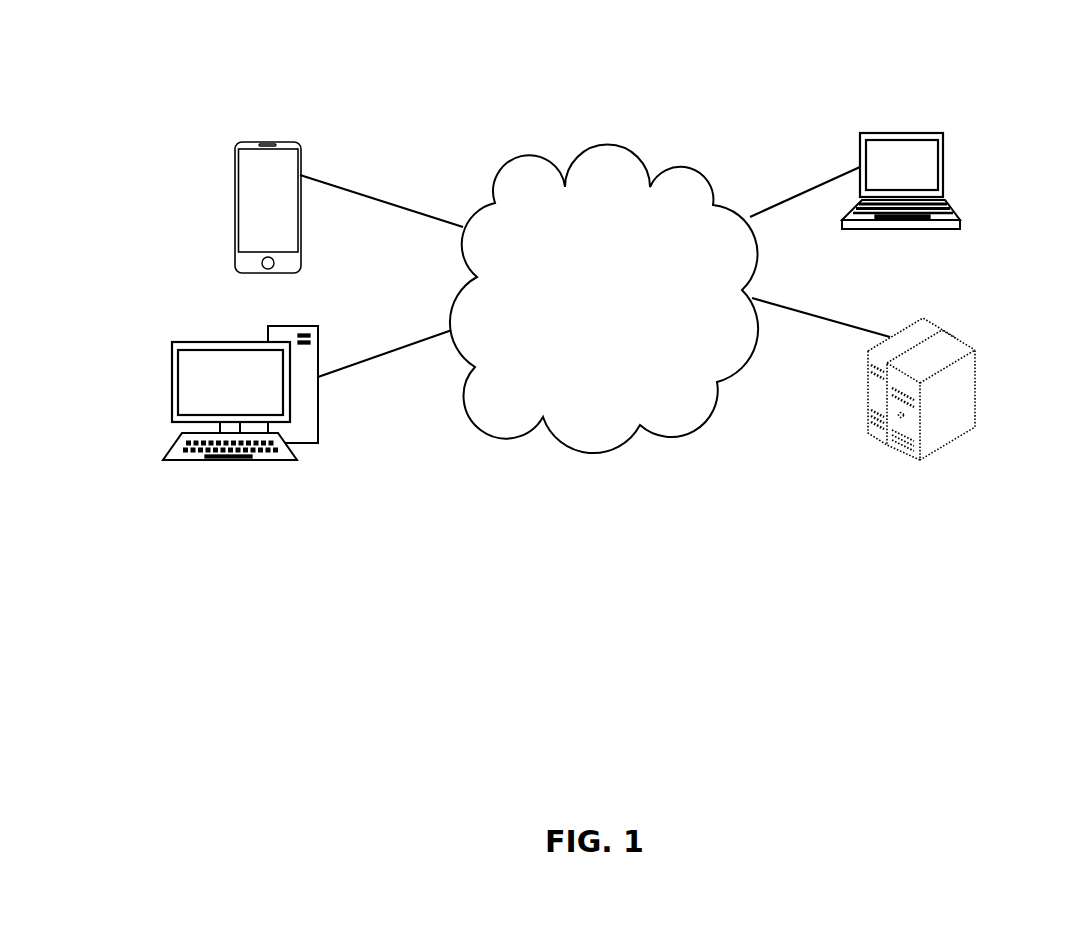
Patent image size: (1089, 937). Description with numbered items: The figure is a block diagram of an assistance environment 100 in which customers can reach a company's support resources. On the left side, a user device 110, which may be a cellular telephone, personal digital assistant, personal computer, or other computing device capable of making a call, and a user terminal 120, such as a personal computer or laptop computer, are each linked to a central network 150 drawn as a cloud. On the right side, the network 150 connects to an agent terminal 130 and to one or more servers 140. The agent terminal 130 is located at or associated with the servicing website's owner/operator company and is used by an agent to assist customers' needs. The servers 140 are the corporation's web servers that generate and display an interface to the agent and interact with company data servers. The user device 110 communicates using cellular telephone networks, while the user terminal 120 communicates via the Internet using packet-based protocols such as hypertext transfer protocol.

The assistance environment 100 is at (108, 37).
The user device 110 is at (235, 212).
The user terminal 120 is at (172, 382).
The agent terminal 130 is at (945, 180).
The servers 140 is at (977, 382).
The network 150 is at (604, 299).